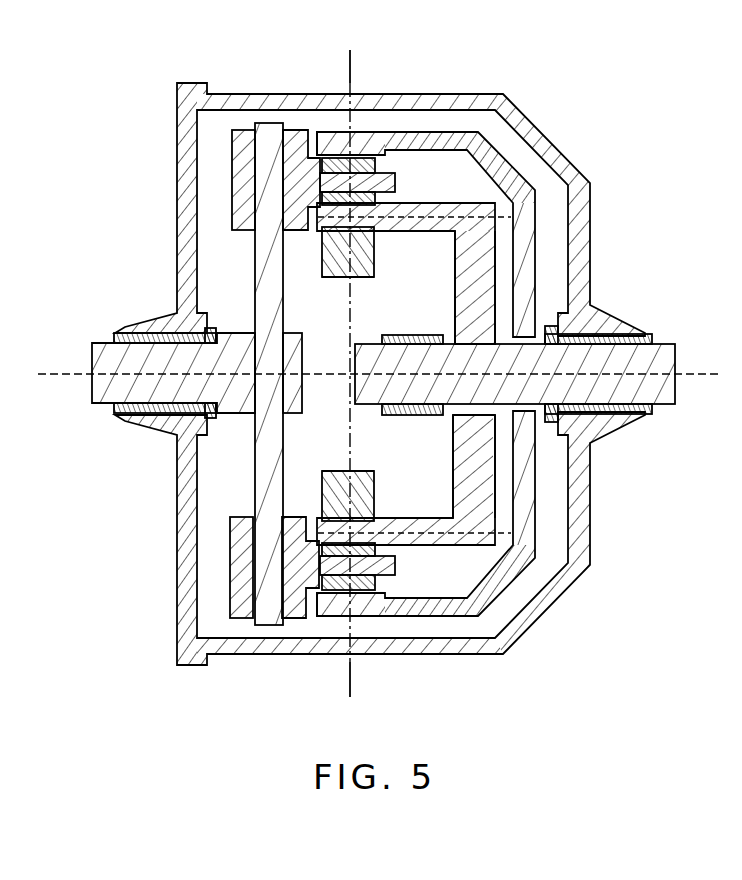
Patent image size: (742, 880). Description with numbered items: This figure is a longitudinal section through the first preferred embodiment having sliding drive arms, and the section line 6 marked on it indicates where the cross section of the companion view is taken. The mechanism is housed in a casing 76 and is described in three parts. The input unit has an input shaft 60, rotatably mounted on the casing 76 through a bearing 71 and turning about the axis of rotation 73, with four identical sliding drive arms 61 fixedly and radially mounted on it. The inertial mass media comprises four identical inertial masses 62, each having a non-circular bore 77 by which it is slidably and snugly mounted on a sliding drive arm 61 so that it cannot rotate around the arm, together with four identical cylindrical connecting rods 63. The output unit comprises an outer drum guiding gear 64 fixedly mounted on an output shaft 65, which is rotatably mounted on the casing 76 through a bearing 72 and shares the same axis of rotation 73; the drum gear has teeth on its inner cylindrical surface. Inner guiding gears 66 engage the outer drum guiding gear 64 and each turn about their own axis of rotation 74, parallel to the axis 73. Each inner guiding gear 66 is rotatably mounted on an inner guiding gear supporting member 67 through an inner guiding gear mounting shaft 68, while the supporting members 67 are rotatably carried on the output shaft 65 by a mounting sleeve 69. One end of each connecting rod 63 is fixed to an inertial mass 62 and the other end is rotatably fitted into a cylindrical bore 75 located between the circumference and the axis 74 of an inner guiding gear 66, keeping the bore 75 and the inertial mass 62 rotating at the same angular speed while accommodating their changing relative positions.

The section line 6- 6 is at (350, 375).
The input shaft 60 is at (91, 360).
The sliding drive arm 61 is at (255, 305).
The inertial mass 62 is at (240, 130).
The cylindrical connecting rod 63 is at (395, 185).
The outer drum guiding gear 64 is at (506, 161).
The output shaft 65 is at (676, 388).
The inner guiding gear 66 is at (338, 277).
The inner guiding gear supporting member 67 is at (445, 268).
The inner guiding gear mounting shaft 68 is at (321, 238).
The inner guiding gear supporting member mounting sleeve 69 is at (448, 334).
The bearing 71 is at (117, 332).
The bearing 72 is at (652, 333).
The axis of rotation 73 is at (48, 378).
The axis of rotation 74 is at (446, 220).
The cylindrical bore 75 is at (383, 160).
The casing 76 is at (472, 94).
The bore 77 is at (300, 128).